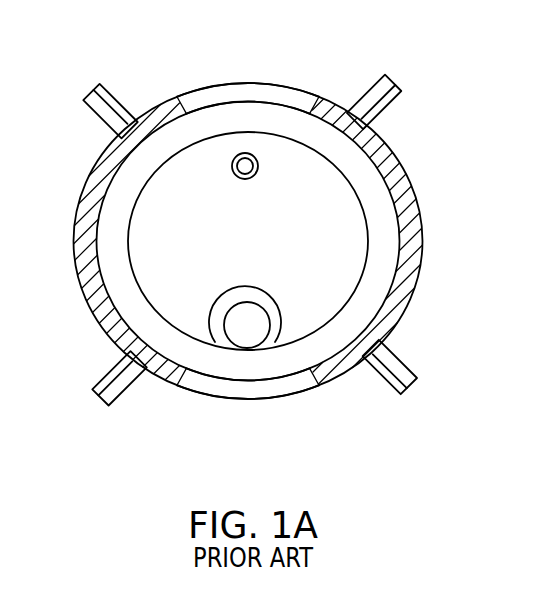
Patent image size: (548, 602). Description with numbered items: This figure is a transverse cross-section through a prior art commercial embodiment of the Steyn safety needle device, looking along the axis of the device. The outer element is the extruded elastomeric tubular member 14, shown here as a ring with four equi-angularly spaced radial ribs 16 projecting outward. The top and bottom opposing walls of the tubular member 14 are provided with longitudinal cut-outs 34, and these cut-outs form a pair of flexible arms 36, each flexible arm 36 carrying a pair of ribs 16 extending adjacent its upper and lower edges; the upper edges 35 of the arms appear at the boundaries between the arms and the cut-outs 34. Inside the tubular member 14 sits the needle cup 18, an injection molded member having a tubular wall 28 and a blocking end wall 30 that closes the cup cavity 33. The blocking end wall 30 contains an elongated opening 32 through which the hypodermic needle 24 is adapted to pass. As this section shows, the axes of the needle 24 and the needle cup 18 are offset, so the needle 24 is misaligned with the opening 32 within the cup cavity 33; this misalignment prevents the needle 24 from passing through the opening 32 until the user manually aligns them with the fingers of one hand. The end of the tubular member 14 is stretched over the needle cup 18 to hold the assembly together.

The extruded elastomeric tubular member 14 is at (468, 274).
The radial ribs 16 is at (84, 102).
The needle cup 18 is at (188, 392).
The hypodermic needle 24 is at (256, 176).
The tubular wall 28 is at (110, 285).
The blocking end wall 30 is at (180, 243).
The elongated opening 32 is at (256, 320).
The cup cavity 33 is at (326, 220).
The longitudinal cut-outs 34 is at (248, 83).
The upper edges 35 is at (173, 97).
The flexible arms 36 is at (70, 232).